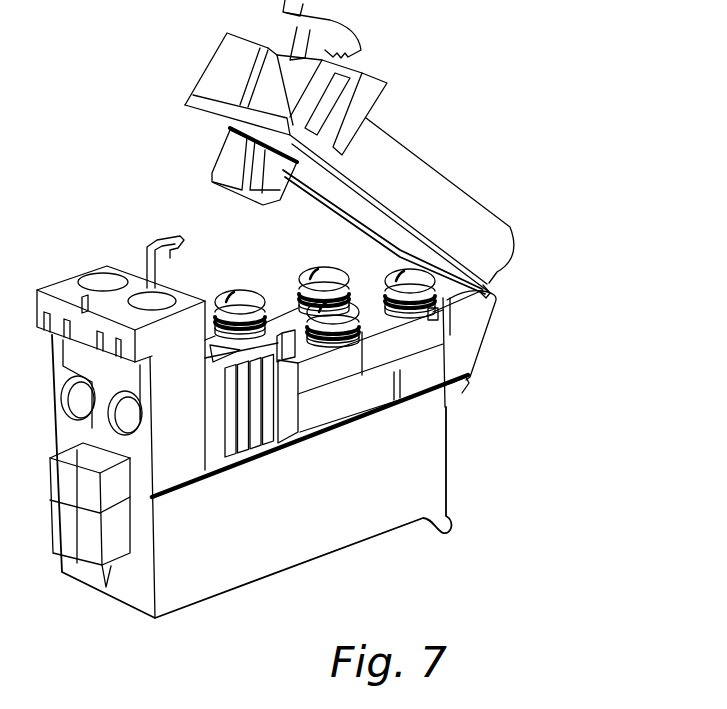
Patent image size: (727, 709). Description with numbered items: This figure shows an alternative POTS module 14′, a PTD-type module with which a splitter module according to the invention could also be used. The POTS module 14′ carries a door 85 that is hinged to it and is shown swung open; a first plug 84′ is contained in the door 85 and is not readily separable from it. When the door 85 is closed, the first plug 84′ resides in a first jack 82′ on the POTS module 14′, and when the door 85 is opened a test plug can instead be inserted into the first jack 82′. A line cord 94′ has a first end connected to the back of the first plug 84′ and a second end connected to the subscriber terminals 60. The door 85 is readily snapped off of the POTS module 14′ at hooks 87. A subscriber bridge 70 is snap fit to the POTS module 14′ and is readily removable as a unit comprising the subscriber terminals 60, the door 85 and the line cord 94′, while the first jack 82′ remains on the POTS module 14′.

The POTS module 14′ is at (194, 622).
The first jack 82′ is at (212, 385).
The subscriber bridge 70 is at (340, 398).
The subscriber terminals 60 is at (433, 318).
The door 85 is at (407, 170).
The first plug 84′ is at (222, 165).
The hooks 87 is at (372, 250).
The line cord 94′ is at (492, 288).